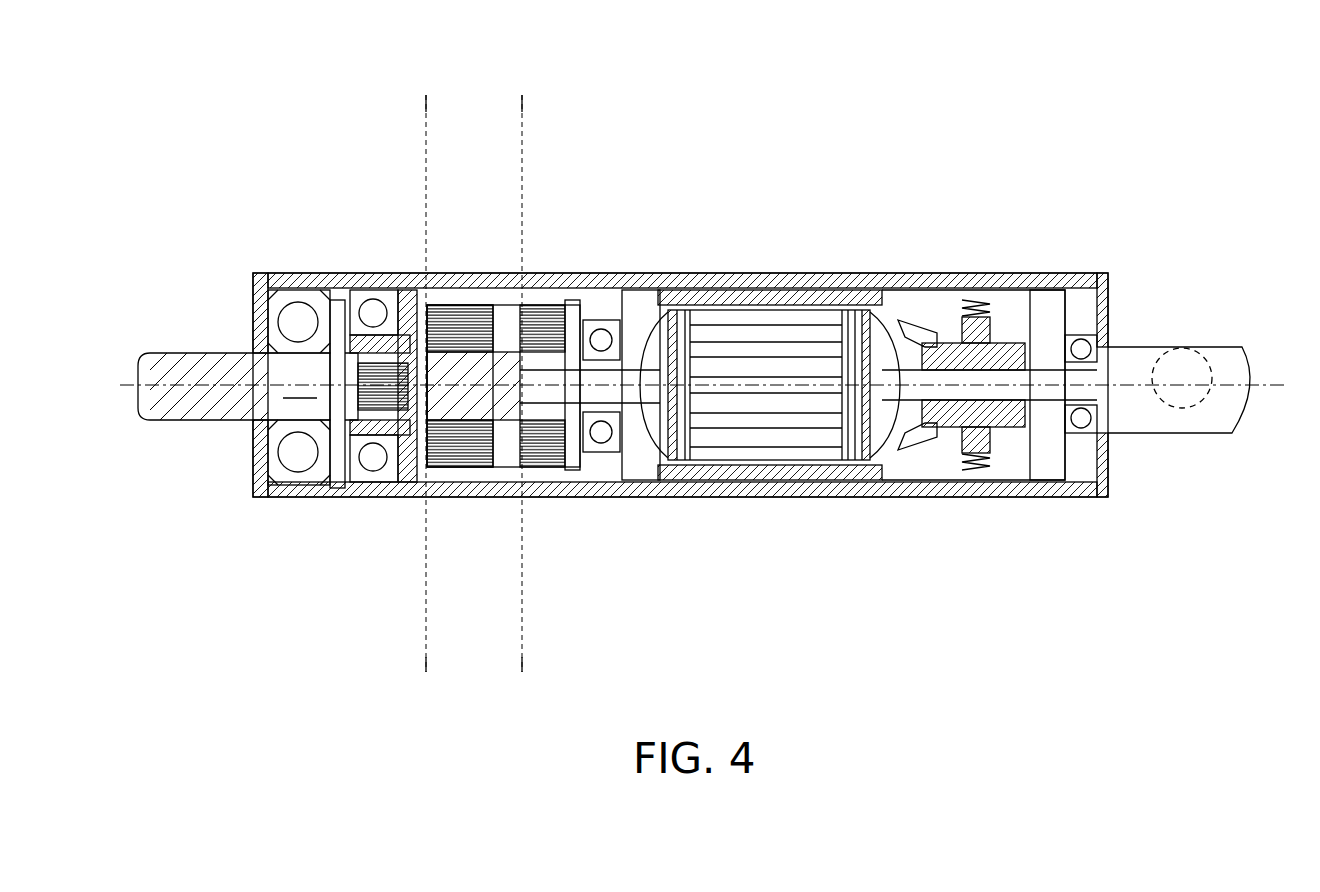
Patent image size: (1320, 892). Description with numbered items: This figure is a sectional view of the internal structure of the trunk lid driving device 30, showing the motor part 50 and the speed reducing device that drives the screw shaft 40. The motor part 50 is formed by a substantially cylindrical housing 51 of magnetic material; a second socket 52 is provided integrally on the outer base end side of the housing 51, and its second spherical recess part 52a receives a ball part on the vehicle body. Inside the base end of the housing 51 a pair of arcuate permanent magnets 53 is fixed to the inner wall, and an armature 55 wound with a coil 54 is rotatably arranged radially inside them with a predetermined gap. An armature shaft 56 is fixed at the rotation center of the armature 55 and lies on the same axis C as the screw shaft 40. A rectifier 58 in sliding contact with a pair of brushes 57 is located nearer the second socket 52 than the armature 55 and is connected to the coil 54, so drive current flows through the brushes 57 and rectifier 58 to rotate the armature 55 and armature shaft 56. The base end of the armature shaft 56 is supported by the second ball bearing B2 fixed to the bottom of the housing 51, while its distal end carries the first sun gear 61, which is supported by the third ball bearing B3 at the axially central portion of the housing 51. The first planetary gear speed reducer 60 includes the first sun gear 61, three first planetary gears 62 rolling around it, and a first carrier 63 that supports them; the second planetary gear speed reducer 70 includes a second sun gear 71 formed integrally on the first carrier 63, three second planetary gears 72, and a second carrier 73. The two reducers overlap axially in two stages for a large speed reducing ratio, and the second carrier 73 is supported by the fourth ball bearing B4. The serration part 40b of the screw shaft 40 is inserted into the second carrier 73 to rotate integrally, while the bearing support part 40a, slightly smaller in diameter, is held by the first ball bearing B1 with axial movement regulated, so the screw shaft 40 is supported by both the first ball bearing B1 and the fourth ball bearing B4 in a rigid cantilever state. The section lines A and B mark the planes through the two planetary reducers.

The electric actuator 30 is at (855, 231).
The screw shaft 40 is at (195, 400).
The bearing support part 40a is at (299, 386).
The serration part 40b is at (341, 497).
The motor part 50 is at (1055, 271).
The housing 51 is at (632, 497).
The second socket 52 is at (1155, 418).
The second spherical recess part 52a is at (1190, 340).
The permanent magnets 53 is at (778, 273).
The coil 54 is at (905, 497).
The armature 55 is at (730, 497).
The armature shaft 56 is at (1028, 497).
The brushes 57 is at (978, 273).
The rectifier 58 is at (1032, 273).
The first planetary gear speed reducer 60 is at (527, 380).
The first sun gear 61 is at (563, 497).
The first planetary gears 62 is at (543, 273).
The first carrier 63 is at (505, 273).
The second planetary gear speed reducer 70 is at (406, 296).
The second sun gear 71 is at (475, 497).
The second planetary gears 72 is at (443, 273).
The second carrier 73 is at (412, 497).
The first ball bearing B1 is at (283, 497).
The second ball bearing B2 is at (1118, 290).
The third ball bearing B3 is at (600, 497).
The fourth ball bearing B4 is at (355, 273).
The section line A is at (521, 104).
The section line B is at (425, 104).
The axis C is at (1232, 433).